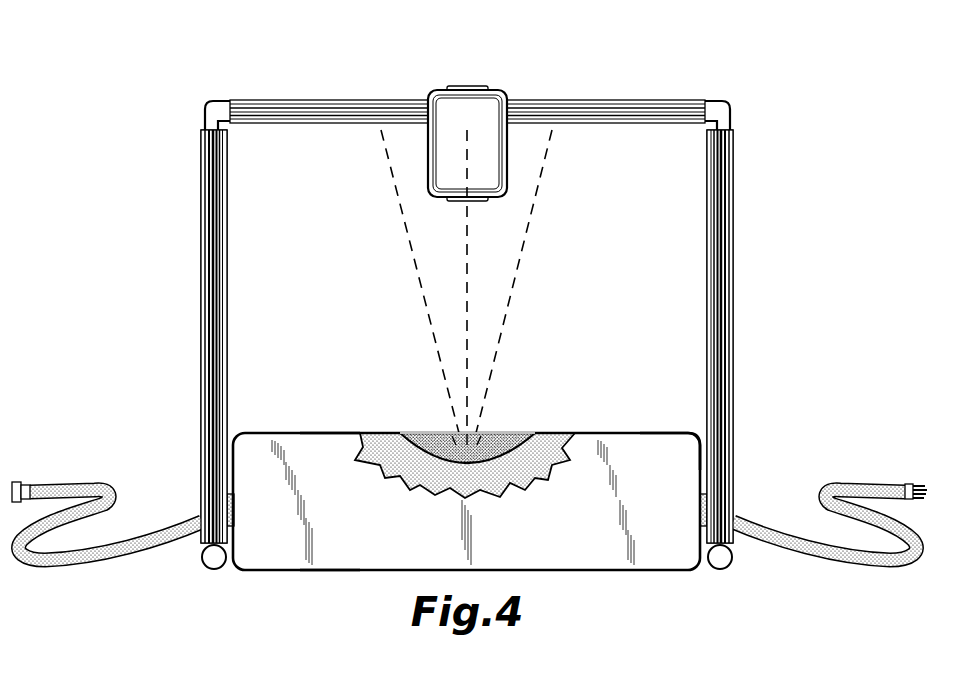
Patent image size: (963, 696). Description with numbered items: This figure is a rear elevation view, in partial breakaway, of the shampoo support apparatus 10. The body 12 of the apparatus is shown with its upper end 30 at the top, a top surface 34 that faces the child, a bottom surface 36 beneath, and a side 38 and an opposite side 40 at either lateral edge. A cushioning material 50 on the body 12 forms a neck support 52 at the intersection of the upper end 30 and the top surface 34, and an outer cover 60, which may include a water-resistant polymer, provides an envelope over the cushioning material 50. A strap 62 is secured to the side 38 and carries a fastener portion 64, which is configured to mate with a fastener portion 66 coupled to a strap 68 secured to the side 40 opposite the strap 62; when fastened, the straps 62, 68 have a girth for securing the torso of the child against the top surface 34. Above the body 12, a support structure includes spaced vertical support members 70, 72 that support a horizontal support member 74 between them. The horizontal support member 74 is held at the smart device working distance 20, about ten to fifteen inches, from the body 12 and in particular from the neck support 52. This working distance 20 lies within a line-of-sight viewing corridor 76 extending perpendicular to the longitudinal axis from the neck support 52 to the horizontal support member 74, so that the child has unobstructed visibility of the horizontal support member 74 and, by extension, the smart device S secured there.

The shampoo support apparatus 10 is at (463, 289).
The body 12 is at (512, 511).
The smart device working distance 20 is at (470, 318).
The upper end 30 is at (568, 509).
The top surface 34 is at (328, 433).
The bottom surface 36 is at (330, 572).
The side 38 is at (230, 499).
The side 40 is at (704, 499).
The cushioning material 50 is at (548, 445).
The neck support 52 is at (433, 440).
The outer cover 60 is at (692, 442).
The strap 62 is at (106, 526).
The fastener portion 64 is at (17, 482).
The fastener portion 66 is at (916, 483).
The strap 68 is at (830, 526).
The vertical support member 70 is at (204, 275).
The vertical support member 72 is at (730, 300).
The horizontal support member 74 is at (330, 98).
The line-of-sight viewing corridor 76 is at (515, 216).
The smart device S is at (500, 96).